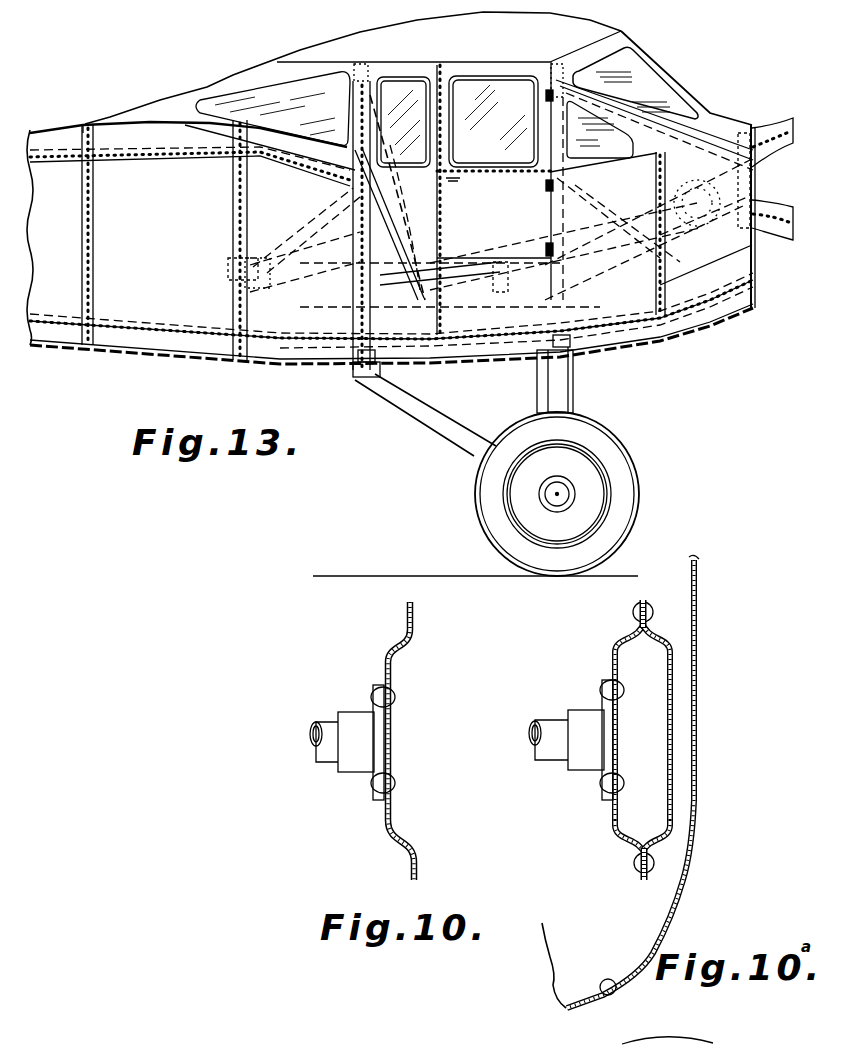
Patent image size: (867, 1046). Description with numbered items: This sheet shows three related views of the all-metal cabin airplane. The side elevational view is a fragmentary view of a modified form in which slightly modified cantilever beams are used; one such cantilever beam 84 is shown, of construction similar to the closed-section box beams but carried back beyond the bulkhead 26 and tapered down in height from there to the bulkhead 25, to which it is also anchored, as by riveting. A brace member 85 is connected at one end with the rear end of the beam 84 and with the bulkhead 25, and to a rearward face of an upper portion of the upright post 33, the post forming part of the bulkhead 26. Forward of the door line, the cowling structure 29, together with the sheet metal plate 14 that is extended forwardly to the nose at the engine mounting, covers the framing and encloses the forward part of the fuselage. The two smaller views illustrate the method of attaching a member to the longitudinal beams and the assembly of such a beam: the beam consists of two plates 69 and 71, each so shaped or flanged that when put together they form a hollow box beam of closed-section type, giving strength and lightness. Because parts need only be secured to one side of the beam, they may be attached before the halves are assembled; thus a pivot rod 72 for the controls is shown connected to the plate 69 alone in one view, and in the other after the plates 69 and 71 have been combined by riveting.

In FIG. 10a, the sheet metal plate 14 is at (585, 1007).
In FIG. 13, the bulkhead 25 is at (237, 238).
In FIG. 13, the bulkhead 26 is at (358, 230).
In FIG. 10a, the cowling structure 29 is at (700, 776).
In FIG. 13, the upright post 33 is at (378, 72).
In FIG. 10, the beam plate 69 is at (391, 666).
In FIG. 10a, the beam plate 69 is at (612, 658).
In FIG. 10a, the beam plate 71 is at (675, 667).
In FIG. 10, the pivot rod 72 is at (330, 723).
In FIG. 10a, the pivot rod 72 is at (550, 727).
In FIG. 13, the cantilever beam 84 is at (312, 303).
In FIG. 13, the brace member 85 is at (315, 230).